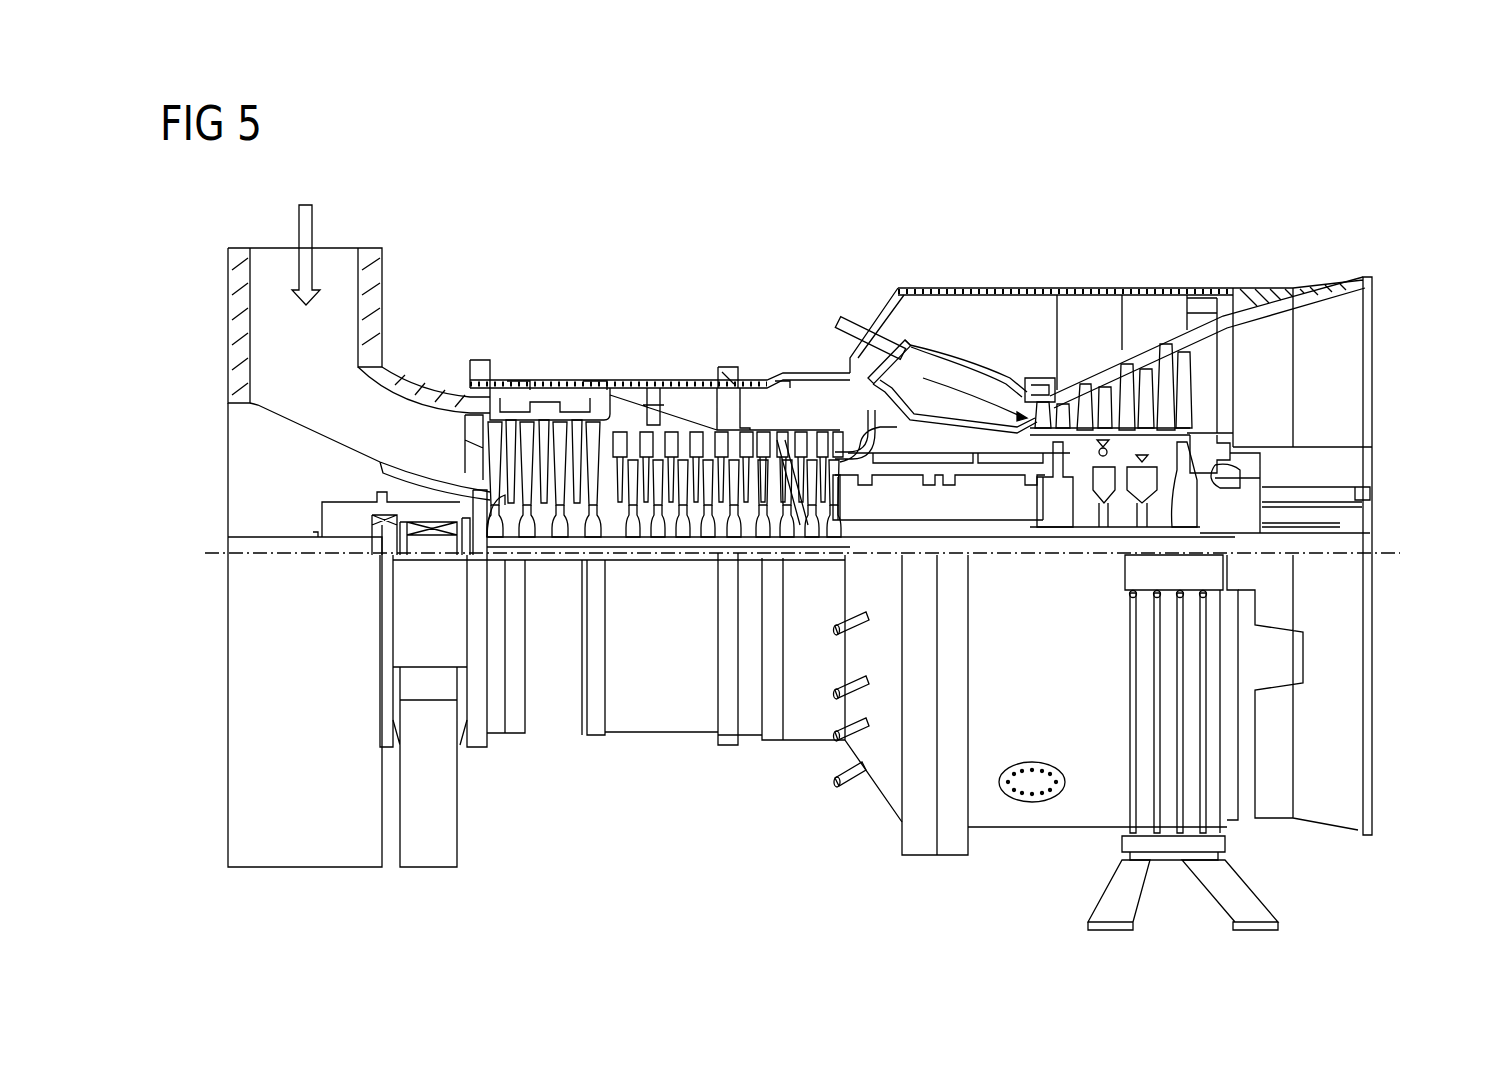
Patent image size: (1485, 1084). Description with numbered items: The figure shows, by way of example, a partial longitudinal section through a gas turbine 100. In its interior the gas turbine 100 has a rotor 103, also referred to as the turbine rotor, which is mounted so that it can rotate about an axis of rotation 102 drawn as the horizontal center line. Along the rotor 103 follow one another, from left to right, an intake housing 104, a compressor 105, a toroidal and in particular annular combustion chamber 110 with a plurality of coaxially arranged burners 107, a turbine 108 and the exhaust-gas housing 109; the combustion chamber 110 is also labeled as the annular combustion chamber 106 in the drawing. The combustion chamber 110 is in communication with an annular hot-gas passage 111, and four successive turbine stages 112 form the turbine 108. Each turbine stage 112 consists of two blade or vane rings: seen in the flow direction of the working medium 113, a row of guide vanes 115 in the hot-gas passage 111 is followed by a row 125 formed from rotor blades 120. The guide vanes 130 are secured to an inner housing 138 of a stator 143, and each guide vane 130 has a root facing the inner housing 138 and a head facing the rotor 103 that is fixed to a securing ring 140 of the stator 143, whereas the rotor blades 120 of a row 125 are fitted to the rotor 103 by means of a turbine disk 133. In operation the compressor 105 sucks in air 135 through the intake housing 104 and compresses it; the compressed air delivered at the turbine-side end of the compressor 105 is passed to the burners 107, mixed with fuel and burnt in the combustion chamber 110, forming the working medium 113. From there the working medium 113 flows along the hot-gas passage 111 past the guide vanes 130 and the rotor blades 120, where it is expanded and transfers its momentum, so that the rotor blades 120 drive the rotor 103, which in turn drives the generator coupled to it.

The gas turbine 100 is at (832, 527).
The axis of rotation 102 is at (212, 553).
The rotor 103 is at (865, 520).
The intake housing 104 is at (374, 328).
The compressor 105 is at (570, 360).
The annular combustion chamber 106 is at (1007, 388).
The burners 107 is at (835, 320).
The turbine 108 is at (1059, 375).
The exhaust-gas housing 109 is at (1273, 290).
The combustion chamber 110 is at (960, 363).
The hot-gas passage 111 is at (1200, 373).
The turbine stages 112 is at (1220, 480).
The working medium 113 is at (932, 363).
The row of guide vanes 115 is at (1089, 435).
The rotor blades 120 is at (1115, 365).
The row of rotor blades 125 is at (1130, 455).
The guide vanes 130 is at (1055, 380).
The turbine disk 133 is at (1215, 513).
The air 135 is at (313, 240).
The inner housing 138 is at (1086, 338).
The securing ring 140 is at (1005, 477).
The stator 143 is at (1019, 290).